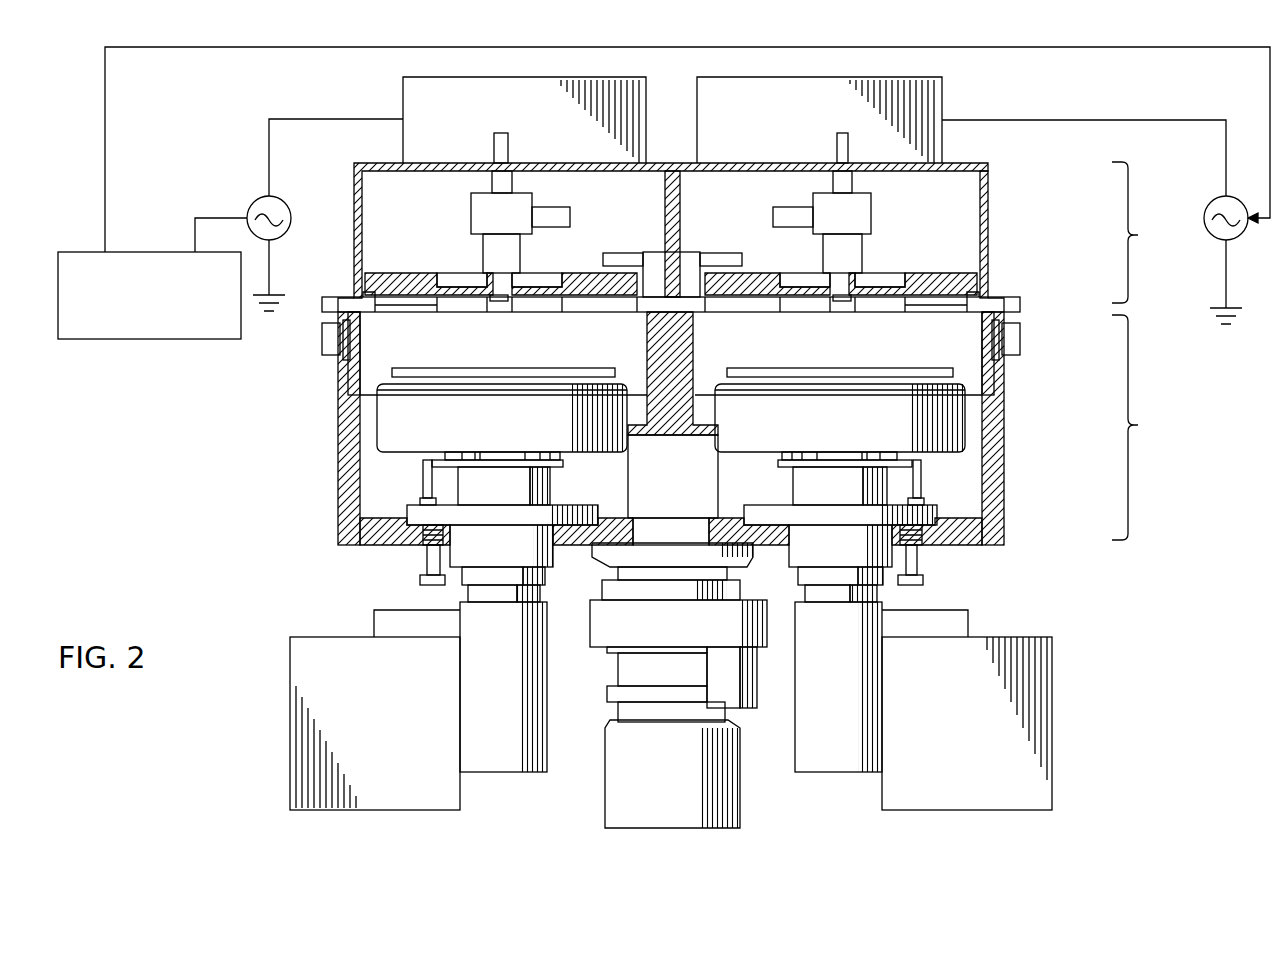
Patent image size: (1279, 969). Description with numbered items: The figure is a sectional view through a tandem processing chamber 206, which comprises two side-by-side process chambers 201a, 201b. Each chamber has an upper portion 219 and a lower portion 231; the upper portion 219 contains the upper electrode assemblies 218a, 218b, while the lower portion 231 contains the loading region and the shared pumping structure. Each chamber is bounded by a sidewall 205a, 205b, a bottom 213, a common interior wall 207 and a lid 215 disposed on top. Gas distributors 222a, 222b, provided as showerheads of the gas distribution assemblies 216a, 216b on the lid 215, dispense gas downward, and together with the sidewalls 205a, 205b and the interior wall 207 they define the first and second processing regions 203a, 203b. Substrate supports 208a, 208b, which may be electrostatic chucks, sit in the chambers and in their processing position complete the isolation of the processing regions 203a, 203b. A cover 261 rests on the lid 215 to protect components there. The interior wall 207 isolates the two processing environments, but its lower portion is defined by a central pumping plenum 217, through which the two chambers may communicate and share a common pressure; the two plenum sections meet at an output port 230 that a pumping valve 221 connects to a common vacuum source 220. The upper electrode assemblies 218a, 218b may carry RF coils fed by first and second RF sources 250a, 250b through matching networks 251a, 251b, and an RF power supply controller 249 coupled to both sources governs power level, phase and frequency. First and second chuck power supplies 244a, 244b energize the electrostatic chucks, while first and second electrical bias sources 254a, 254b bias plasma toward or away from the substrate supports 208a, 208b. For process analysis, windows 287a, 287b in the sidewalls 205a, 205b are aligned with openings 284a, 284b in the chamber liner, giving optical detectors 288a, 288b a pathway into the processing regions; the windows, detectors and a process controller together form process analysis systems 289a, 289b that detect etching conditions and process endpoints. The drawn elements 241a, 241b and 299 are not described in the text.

The first process chamber 201a is at (342, 490).
The second process chamber 201b is at (1004, 495).
The first processing region 203a is at (548, 345).
The second processing region 203b is at (877, 345).
The sidewall 205a is at (338, 458).
The sidewall 205b is at (1004, 452).
The tandem processing chamber 206 is at (362, 150).
The interior wall 207 is at (660, 362).
The substrate support 208a is at (372, 413).
The substrate support 208b is at (972, 410).
The bottom 213 is at (348, 545).
The lid 215 is at (1012, 283).
The gas distribution assembly 216a is at (471, 200).
The gas distribution assembly 216b is at (873, 200).
The central pumping plenum 217 is at (732, 468).
The upper electrode assembly 218a is at (447, 272).
The upper electrode assembly 218b is at (902, 272).
The upper portion 219 is at (1150, 232).
The vacuum source 220 is at (690, 789).
The pumping valve 221 is at (672, 590).
The gas distributor 222a is at (398, 300).
The gas distributor 222b is at (944, 305).
The output port 230 is at (690, 467).
The lower portion 231 is at (1150, 427).
The first lift pin assembly 241a is at (503, 463).
The second lift pin assembly 241b is at (843, 463).
The first chuck power supply 244a is at (383, 622).
The second chuck power supply 244b is at (958, 625).
The RF power supply controller 249 is at (148, 340).
The first RF source 250a is at (255, 198).
The second RF source 250b is at (1216, 200).
The matching network 251a is at (403, 92).
The matching network 251b is at (942, 90).
The first electrical bias source 254a is at (292, 728).
The second electrical bias source 254b is at (1054, 728).
The cover 261 is at (990, 216).
The opening 284a is at (352, 336).
The opening 284b is at (990, 338).
The window 287a is at (342, 340).
The window 287b is at (1000, 340).
The optical detector 288a is at (320, 336).
The optical detector 288b is at (1022, 336).
The process analysis system 289a is at (275, 387).
The process analysis system 289b is at (1032, 315).
The central gas feed 299 is at (665, 222).